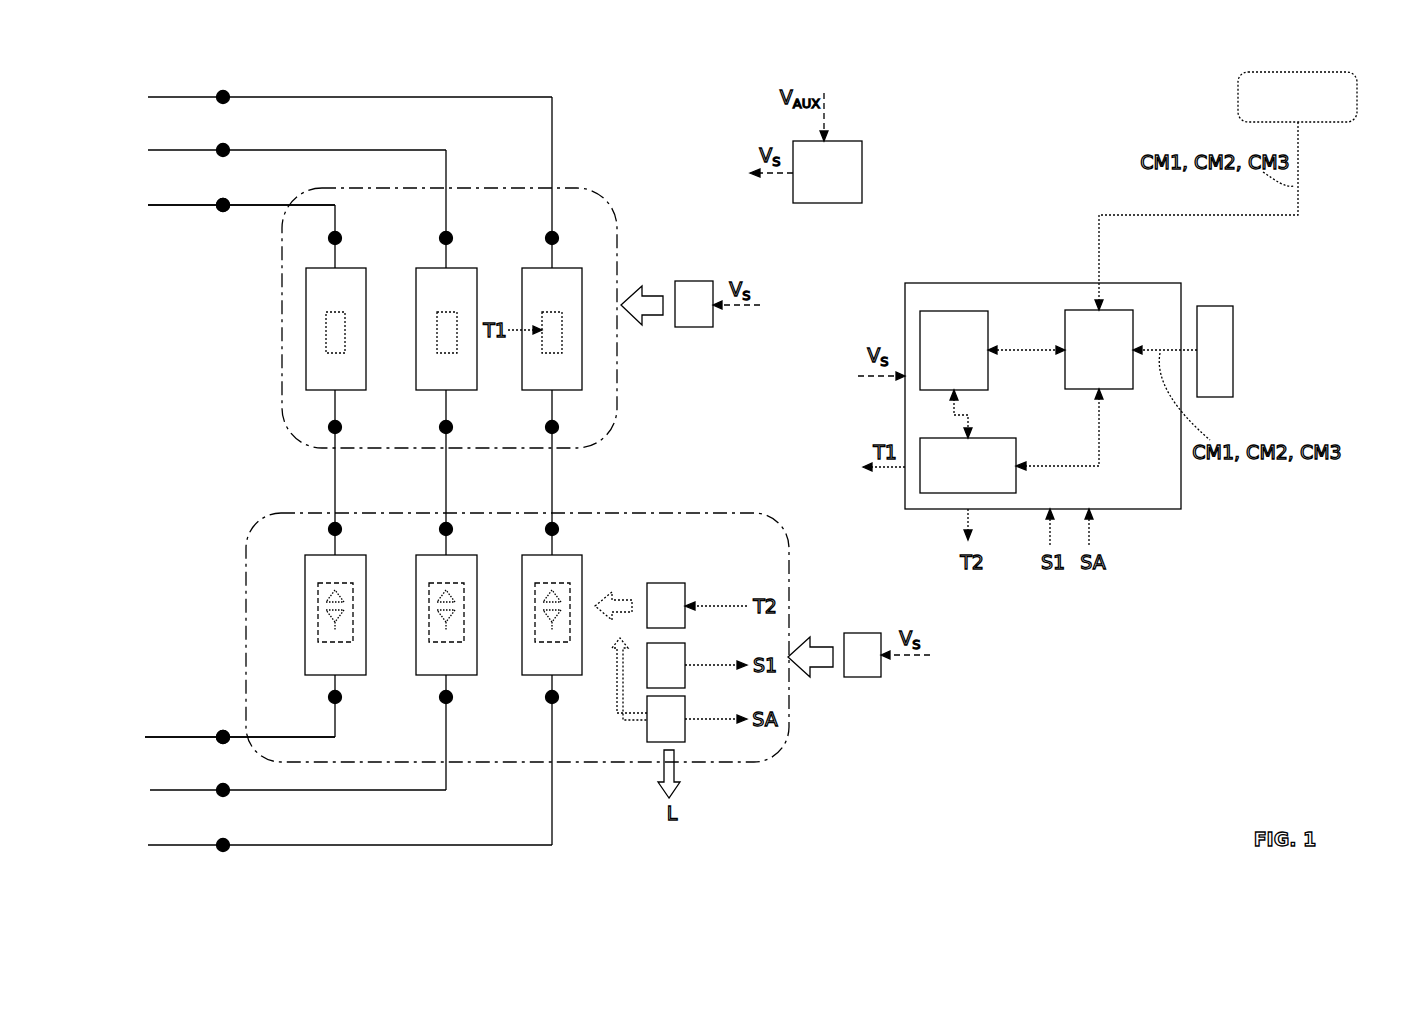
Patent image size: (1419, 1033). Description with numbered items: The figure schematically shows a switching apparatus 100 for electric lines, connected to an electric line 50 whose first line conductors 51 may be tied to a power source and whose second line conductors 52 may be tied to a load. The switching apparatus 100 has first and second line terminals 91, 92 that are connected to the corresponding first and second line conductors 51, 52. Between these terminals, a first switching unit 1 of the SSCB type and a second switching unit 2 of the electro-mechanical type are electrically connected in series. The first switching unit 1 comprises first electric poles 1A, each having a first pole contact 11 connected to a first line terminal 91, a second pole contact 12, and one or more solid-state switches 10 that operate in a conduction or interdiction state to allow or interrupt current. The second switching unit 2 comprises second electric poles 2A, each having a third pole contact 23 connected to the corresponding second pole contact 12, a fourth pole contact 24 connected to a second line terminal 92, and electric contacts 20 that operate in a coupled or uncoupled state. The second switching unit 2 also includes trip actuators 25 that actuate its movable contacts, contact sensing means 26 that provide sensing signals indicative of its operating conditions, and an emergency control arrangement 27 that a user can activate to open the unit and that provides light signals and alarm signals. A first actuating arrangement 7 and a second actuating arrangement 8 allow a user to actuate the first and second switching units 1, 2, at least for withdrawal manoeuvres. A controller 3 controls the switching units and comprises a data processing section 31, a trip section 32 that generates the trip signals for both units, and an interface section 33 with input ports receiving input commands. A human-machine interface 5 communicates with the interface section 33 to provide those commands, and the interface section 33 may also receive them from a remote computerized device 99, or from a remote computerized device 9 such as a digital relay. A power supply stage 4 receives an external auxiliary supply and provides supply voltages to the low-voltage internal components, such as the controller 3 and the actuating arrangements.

The switching apparatus 100 is at (1057, 646).
The first switching unit 1 is at (283, 291).
The first electric pole 1A is at (583, 285).
The solid-state switch 10 is at (345, 325).
The first pole contact 11 is at (338, 242).
The second pole contact 12 is at (338, 429).
The second switching unit 2 is at (247, 551).
The second electric pole 2A is at (586, 573).
The electric contacts 20 is at (318, 615).
The third pole contact 23 is at (338, 530).
The fourth pole contact 24 is at (338, 698).
The trip actuator 25 is at (655, 617).
The contact sensing means 26 is at (655, 676).
The emergency control arrangement 27 is at (655, 730).
The controller 3 is at (1122, 500).
The data processing section 31 is at (956, 477).
The trip section 32 is at (942, 361).
The interface section 33 is at (1087, 361).
The power supply stage 4 is at (820, 203).
The human-machine interface 5 is at (1210, 318).
The first actuating arrangement 7 is at (687, 315).
The second actuating arrangement 8 is at (855, 666).
The remote computerized device 9 is at (683, 273).
The electric line 50 is at (108, 95).
The first line conductor 51 is at (178, 207).
The second line conductor 52 is at (177, 737).
The first line terminal 91 is at (224, 209).
The second line terminal 92 is at (223, 735).
The remote computerized device 99 is at (1343, 105).